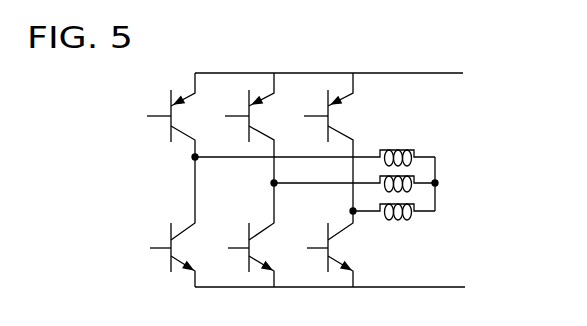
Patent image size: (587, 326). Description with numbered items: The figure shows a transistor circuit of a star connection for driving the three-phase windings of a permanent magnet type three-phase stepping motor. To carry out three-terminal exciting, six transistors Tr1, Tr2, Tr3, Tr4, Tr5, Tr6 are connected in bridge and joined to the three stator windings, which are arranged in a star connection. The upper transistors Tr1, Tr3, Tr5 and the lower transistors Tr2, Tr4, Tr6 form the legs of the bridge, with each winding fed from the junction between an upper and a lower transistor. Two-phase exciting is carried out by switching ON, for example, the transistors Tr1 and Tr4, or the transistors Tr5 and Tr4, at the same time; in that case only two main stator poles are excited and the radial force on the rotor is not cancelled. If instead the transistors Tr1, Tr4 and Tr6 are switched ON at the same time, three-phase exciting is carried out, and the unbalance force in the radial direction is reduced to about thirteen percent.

The transistor Tr1 is at (184, 115).
The transistor Tr2 is at (185, 222).
The transistor Tr3 is at (264, 115).
The transistor Tr4 is at (265, 222).
The transistor Tr5 is at (343, 115).
The transistor Tr6 is at (345, 222).